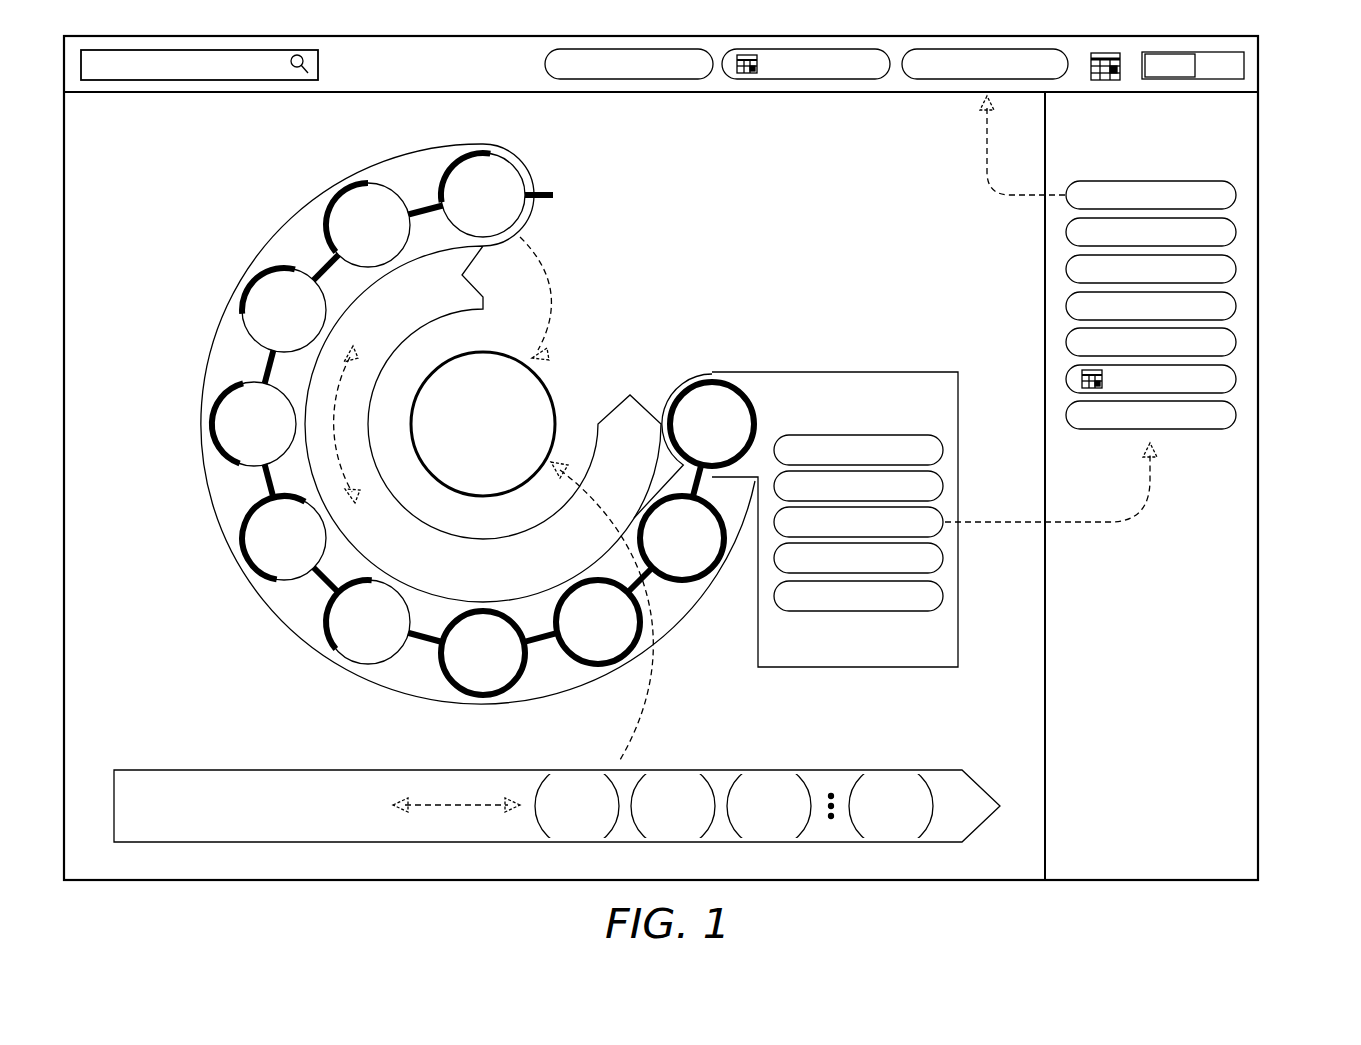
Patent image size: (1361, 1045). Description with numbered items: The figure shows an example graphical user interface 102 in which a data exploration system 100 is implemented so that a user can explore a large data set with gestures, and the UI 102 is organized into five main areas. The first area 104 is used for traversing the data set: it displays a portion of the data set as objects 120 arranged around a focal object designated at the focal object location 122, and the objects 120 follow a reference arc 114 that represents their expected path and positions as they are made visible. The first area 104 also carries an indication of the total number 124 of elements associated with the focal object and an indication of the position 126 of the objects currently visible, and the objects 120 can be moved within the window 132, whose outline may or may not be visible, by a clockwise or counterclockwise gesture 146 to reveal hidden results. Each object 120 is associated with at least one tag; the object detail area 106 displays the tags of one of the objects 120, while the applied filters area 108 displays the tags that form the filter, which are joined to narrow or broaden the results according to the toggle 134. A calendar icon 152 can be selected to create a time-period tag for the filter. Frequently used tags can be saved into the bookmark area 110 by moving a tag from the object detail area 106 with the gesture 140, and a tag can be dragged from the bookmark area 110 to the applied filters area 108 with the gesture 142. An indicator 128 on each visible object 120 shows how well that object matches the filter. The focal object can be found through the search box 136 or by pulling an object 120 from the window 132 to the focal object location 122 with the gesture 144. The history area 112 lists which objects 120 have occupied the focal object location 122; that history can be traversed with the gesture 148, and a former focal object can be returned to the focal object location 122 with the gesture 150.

The data exploration system 100 is at (702, 458).
The user interface 102 is at (1260, 140).
The first area 104 is at (169, 228).
The object detail area 106 is at (865, 492).
The applied filters area 108 is at (720, 101).
The bookmark area 110 is at (1145, 279).
The history area 112 is at (557, 782).
The reference arc 114 is at (542, 479).
The object 120 is at (497, 185).
The focal object location 122 is at (552, 372).
The total number 124 is at (744, 247).
The position 126 is at (666, 199).
The indicator 128 is at (345, 185).
The window 132 is at (292, 209).
The toggle 134 is at (1178, 80).
The search box 136 is at (200, 81).
The gesture 140 is at (1108, 530).
The gesture 142 is at (986, 170).
The gesture 144 is at (552, 318).
The gesture 146 is at (336, 423).
The gesture 148 is at (458, 803).
The gesture 150 is at (651, 684).
The calendar icon 152 is at (1104, 81).